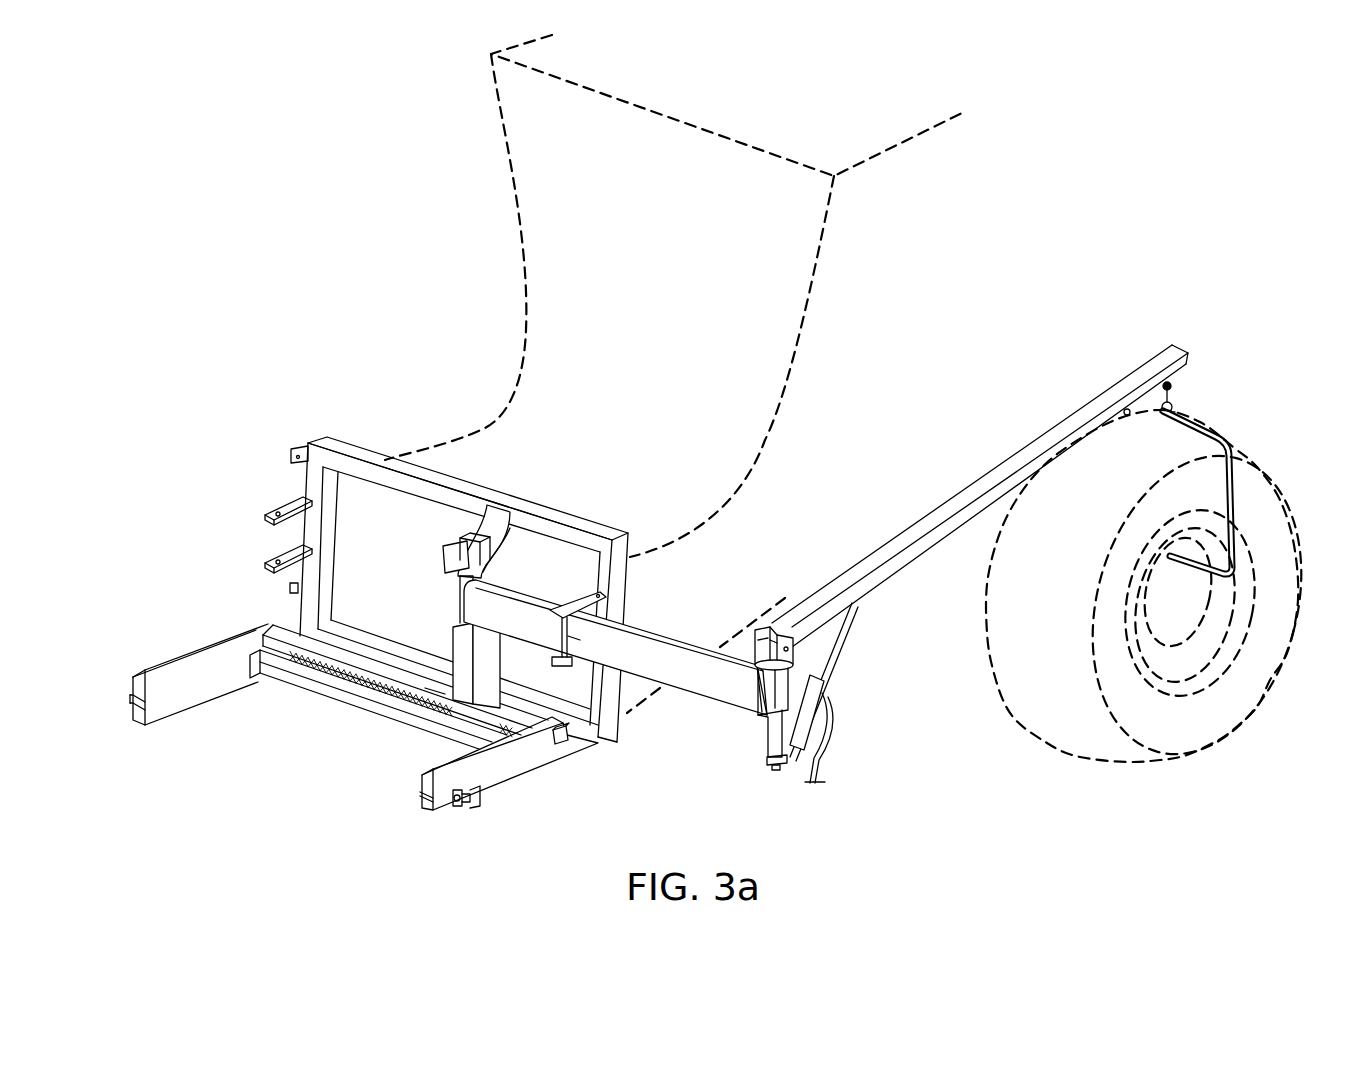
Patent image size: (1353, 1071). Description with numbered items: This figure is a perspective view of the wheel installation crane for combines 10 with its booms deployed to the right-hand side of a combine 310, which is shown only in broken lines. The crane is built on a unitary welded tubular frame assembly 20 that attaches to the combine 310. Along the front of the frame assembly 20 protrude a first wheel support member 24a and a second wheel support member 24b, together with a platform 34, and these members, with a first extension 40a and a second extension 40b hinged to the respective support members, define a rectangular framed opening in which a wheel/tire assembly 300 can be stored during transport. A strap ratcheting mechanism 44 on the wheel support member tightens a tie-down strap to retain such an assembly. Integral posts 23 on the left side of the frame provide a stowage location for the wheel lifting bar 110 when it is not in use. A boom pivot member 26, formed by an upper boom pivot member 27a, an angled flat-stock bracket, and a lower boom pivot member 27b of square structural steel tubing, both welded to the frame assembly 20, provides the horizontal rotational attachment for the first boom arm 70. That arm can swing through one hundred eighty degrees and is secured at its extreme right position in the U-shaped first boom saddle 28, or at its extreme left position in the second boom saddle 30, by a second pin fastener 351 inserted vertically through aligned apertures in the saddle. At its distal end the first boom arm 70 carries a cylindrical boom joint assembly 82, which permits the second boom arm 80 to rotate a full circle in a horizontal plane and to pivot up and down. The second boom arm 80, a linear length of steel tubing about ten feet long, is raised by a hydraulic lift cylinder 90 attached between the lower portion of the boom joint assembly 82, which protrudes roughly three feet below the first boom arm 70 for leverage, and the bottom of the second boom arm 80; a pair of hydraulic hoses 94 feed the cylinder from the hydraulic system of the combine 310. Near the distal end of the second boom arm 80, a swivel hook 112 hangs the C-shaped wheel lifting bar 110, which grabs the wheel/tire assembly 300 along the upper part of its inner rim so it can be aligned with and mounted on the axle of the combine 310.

The wheel installation crane for combines 10 is at (234, 212).
The frame assembly 20 is at (374, 444).
The integral posts 23 is at (291, 457).
The first wheel support member 24a is at (512, 778).
The second wheel support member 24b is at (166, 712).
The boom pivot member 26 is at (434, 627).
The upper boom pivot member 27a is at (497, 515).
The lower boom pivot member 27b is at (428, 692).
The first boom saddle 28 is at (605, 594).
The second boom saddle 30 is at (262, 520).
The platform 34 is at (335, 684).
The first extension 40a is at (420, 788).
The second extension 40b is at (172, 657).
The strap ratcheting mechanism 44 is at (470, 806).
The first boom arm 70 is at (680, 690).
The second boom arm 80 is at (1062, 427).
The boom joint assembly 82 is at (762, 672).
The hydraulic lift cylinder 90 is at (814, 690).
The hydraulic hoses 94 is at (815, 762).
The wheel lifting bar 110 is at (1236, 484).
The swivel hook 112 is at (1173, 394).
The wheel/tire assembly 300 is at (1077, 744).
The combine 310 is at (505, 163).
The second pin fastener 351 is at (572, 636).